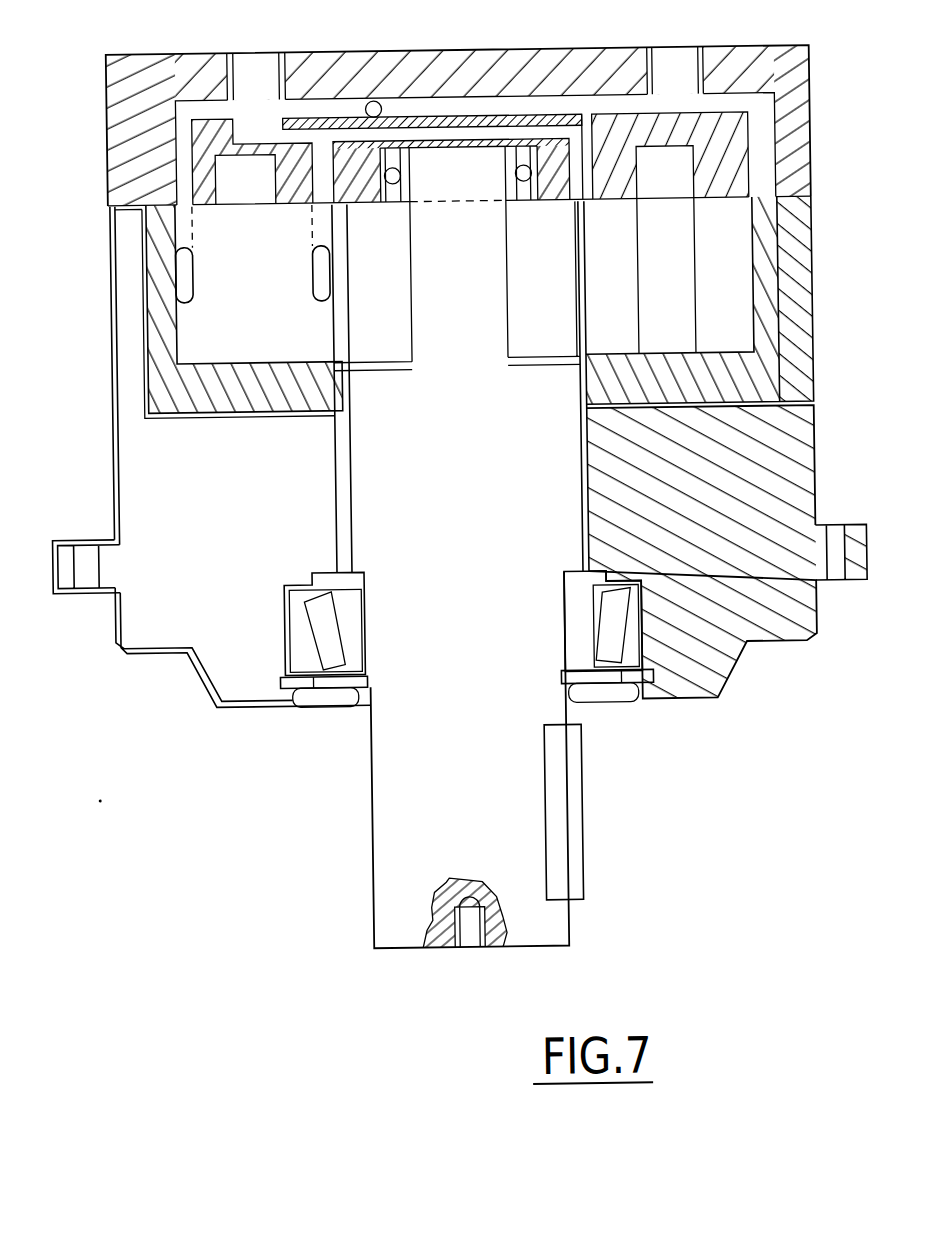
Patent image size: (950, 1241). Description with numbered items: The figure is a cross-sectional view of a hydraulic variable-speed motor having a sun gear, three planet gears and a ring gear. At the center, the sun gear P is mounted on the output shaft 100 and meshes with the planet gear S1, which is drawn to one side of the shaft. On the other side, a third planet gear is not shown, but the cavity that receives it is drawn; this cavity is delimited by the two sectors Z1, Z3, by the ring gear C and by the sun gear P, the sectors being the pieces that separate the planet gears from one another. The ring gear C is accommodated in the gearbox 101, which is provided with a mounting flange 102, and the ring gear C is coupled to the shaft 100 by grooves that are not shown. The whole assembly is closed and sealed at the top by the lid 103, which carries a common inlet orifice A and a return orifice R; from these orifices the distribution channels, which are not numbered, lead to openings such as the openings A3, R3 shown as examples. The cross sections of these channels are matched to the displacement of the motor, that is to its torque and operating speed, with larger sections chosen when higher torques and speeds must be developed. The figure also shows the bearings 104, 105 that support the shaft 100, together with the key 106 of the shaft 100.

The common inlet orifice A is at (266, 77).
The return orifice R is at (681, 63).
The lid 103 is at (815, 72).
The bearing 104 is at (528, 172).
The sector Z1 is at (111, 223).
The sector Z3 is at (212, 234).
The opening R3 is at (187, 269).
The opening A3 is at (333, 260).
The sun gear P is at (391, 310).
The ring gear C is at (363, 391).
The planet gear S1 is at (724, 299).
The gearbox 101 is at (150, 471).
The mounting flange 102 is at (66, 590).
The bearing 105 is at (603, 648).
The output shaft 100 is at (406, 778).
The key 106 is at (563, 792).